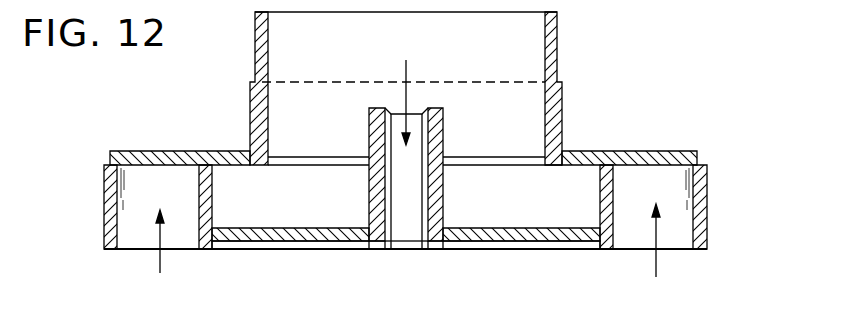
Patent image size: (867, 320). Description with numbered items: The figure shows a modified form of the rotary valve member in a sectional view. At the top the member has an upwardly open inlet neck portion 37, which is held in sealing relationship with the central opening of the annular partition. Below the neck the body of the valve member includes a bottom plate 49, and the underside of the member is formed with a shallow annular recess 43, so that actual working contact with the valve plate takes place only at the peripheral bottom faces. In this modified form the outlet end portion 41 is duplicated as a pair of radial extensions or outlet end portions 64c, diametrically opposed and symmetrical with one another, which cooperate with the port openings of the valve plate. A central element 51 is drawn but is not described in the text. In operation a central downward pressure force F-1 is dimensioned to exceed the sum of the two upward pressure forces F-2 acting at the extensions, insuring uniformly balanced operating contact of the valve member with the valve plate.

The inlet neck portion 37 is at (263, 106).
The outlet end portion 41 is at (707, 184).
The shallow annular recess 43 is at (338, 250).
The bottom plate 49 is at (298, 230).
The central boss 51 is at (440, 134).
The radial extensions or outlet end portions 64c is at (176, 197).
The central downward pressure force F-1 is at (406, 73).
The upward pressure forces F-2 is at (160, 268).